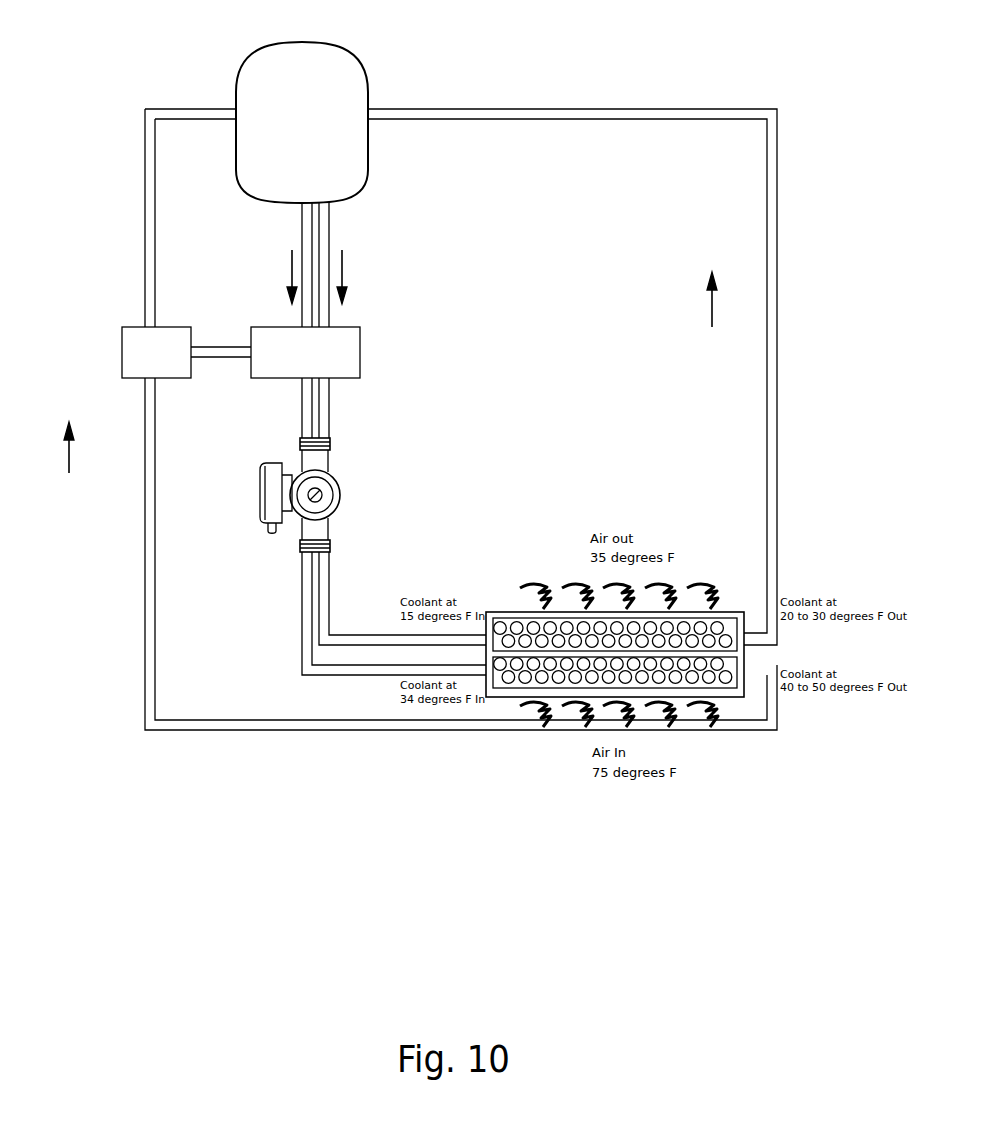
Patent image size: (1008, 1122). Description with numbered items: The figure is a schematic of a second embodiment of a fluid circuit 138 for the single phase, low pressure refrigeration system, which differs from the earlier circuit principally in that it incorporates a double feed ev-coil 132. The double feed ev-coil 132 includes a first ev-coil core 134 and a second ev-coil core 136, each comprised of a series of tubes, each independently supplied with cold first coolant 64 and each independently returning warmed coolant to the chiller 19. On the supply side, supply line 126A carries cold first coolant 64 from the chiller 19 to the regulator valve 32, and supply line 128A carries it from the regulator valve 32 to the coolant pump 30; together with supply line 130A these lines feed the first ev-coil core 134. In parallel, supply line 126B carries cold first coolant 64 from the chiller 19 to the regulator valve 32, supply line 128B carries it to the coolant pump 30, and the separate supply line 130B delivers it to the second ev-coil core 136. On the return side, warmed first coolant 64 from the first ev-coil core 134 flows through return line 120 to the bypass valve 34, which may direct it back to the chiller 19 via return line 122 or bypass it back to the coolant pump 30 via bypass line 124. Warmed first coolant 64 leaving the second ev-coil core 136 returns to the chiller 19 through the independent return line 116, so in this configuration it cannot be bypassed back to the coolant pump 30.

The chiller 19 is at (368, 90).
The coolant pump 30 is at (342, 496).
The regulator valve 32 is at (360, 340).
The bypass valve 34 is at (160, 327).
The first coolant 64 is at (777, 373).
The return line 116 is at (777, 262).
The return line 120 is at (145, 677).
The return line 122 is at (145, 192).
The bypass line 124 is at (221, 357).
The supply line 126A is at (302, 230).
The supply line 126B is at (330, 222).
The supply line 128A is at (302, 410).
The supply line 128B is at (329, 418).
The supply line 130A is at (302, 587).
The supply line 130B is at (343, 633).
The double feed ev-coil 132 is at (517, 578).
The first ev-coil core 134 is at (725, 690).
The second ev-coil core 136 is at (688, 612).
The fluid circuit 138 is at (566, 72).